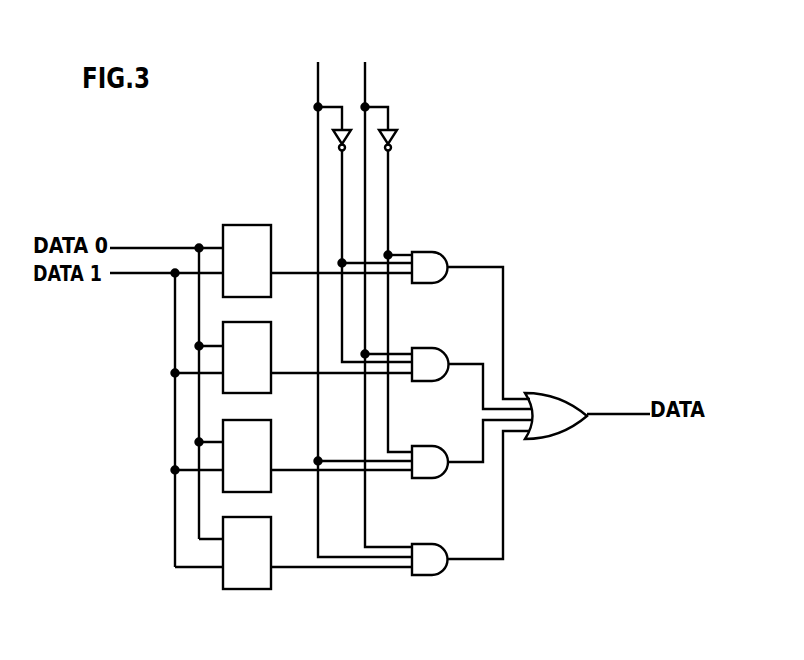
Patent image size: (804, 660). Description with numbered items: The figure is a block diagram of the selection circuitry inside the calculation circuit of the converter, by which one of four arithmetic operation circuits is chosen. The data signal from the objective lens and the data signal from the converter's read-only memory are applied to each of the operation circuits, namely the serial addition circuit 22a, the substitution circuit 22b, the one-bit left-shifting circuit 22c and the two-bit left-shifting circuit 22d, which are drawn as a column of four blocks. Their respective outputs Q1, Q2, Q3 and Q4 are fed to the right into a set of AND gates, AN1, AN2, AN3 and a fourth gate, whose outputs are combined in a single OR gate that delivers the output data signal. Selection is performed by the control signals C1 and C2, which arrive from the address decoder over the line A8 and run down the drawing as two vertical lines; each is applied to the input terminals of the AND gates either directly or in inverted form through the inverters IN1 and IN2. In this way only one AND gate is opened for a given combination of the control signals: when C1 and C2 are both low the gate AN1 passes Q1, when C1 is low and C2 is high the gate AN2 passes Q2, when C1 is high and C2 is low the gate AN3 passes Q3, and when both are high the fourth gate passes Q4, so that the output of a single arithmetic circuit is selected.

The serial addition circuit 22a is at (252, 230).
The substitution circuit 22b is at (268, 333).
The 1-bit left-shifting circuit 22c is at (268, 433).
The 2-bit left-shifting circuit 22d is at (267, 528).
The output signal of serial addition circuit Q1 is at (341, 265).
The output signal of substitution circuit Q2 is at (341, 365).
The output signal of 1-bit left-shifting circuit Q3 is at (341, 461).
The output signal of 2-bit left-shifting circuit Q4 is at (341, 558).
The AND gate AN1 is at (435, 262).
The AND gate AN2 is at (433, 357).
The AND gate AN3 is at (433, 455).
The inverter IN1 is at (336, 133).
The inverter IN2 is at (397, 129).
The control signal C1 is at (359, 296).
The control signal C2 is at (382, 291).
The signal line from address decoder A8 is at (378, 27).